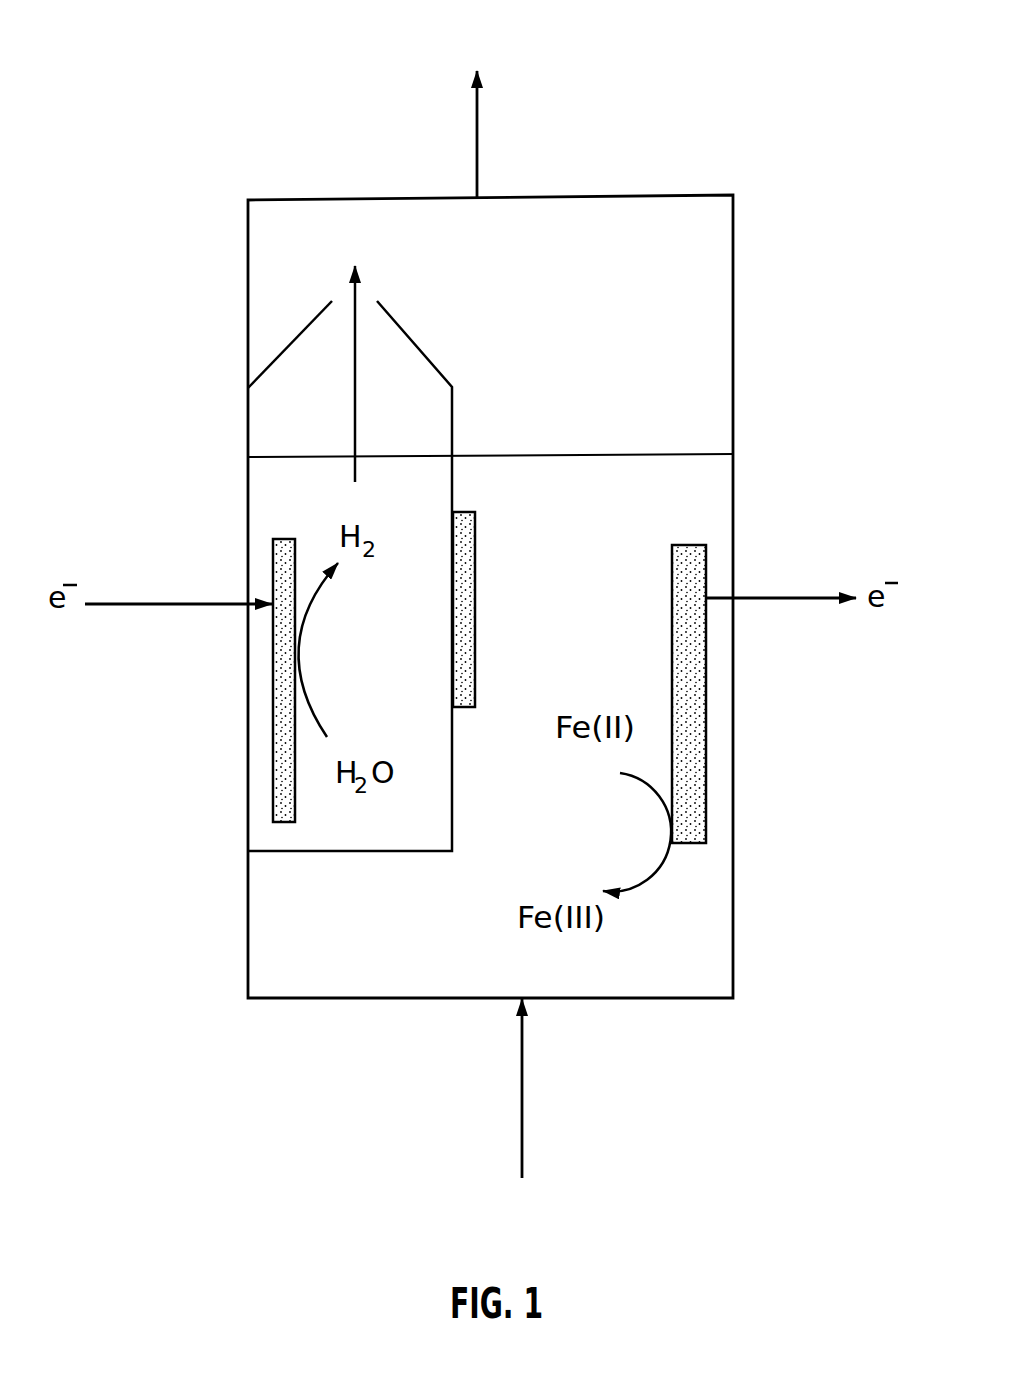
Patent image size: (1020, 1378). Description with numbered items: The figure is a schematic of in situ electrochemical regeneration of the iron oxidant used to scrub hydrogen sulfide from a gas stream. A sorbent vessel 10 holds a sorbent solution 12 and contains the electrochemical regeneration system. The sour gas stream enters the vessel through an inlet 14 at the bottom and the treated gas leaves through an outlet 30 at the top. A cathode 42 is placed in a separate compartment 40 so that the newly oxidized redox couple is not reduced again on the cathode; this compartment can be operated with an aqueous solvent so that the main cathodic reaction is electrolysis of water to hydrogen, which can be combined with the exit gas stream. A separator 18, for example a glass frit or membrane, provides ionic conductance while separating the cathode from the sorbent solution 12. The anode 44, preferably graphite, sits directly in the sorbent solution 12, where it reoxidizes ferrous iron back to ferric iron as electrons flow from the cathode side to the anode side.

The sorbent vessel 10 is at (248, 952).
The sorbent solution 12 is at (622, 467).
The inlet 14 is at (518, 998).
The separator 18 is at (452, 528).
The outlet 30 is at (479, 197).
The cathode compartment 40 is at (305, 853).
The cathode 42 is at (275, 727).
The anode 44 is at (707, 708).